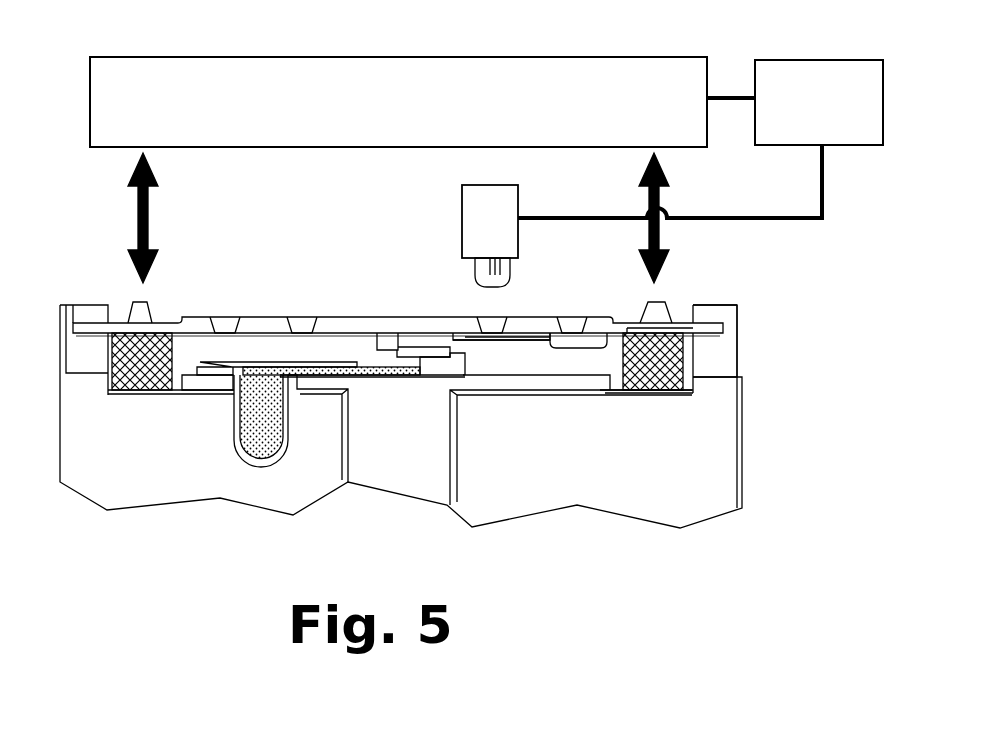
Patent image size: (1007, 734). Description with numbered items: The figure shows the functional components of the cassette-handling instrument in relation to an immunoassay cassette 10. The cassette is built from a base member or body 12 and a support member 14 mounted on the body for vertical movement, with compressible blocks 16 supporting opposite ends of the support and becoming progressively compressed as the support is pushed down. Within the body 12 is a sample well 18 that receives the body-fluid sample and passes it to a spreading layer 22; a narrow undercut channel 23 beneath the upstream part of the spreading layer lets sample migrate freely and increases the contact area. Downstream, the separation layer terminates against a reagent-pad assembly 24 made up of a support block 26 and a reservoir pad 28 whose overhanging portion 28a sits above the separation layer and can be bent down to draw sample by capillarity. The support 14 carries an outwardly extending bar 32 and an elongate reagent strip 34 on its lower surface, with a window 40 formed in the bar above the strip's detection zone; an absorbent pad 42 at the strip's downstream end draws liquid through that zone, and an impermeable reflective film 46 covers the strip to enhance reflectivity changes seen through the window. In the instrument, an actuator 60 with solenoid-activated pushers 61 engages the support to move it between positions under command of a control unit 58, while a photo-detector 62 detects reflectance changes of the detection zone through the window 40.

The immunoassay cassette 10 is at (749, 292).
The base member or body 12 is at (722, 494).
The support member 14 is at (250, 319).
The compressible blocks 16 is at (112, 358).
The sample well 18 is at (270, 464).
The spreading layer 22 is at (310, 366).
The channel 23 is at (333, 380).
The reagent-pad assembly 24 is at (470, 365).
The support block 26 is at (437, 378).
The reservoir pad 28 is at (416, 347).
The overhanging portion 28a is at (393, 348).
The bar 32 is at (683, 320).
The reagent strip 34 is at (545, 333).
The window 40 is at (483, 320).
The absorbent pad 42 is at (593, 335).
The impermeable reflective film 46 is at (533, 342).
The control unit 58 is at (843, 60).
The actuator 60 is at (352, 57).
The solenoid-activated pushers 61 is at (138, 202).
The photo-detector 62 is at (472, 212).